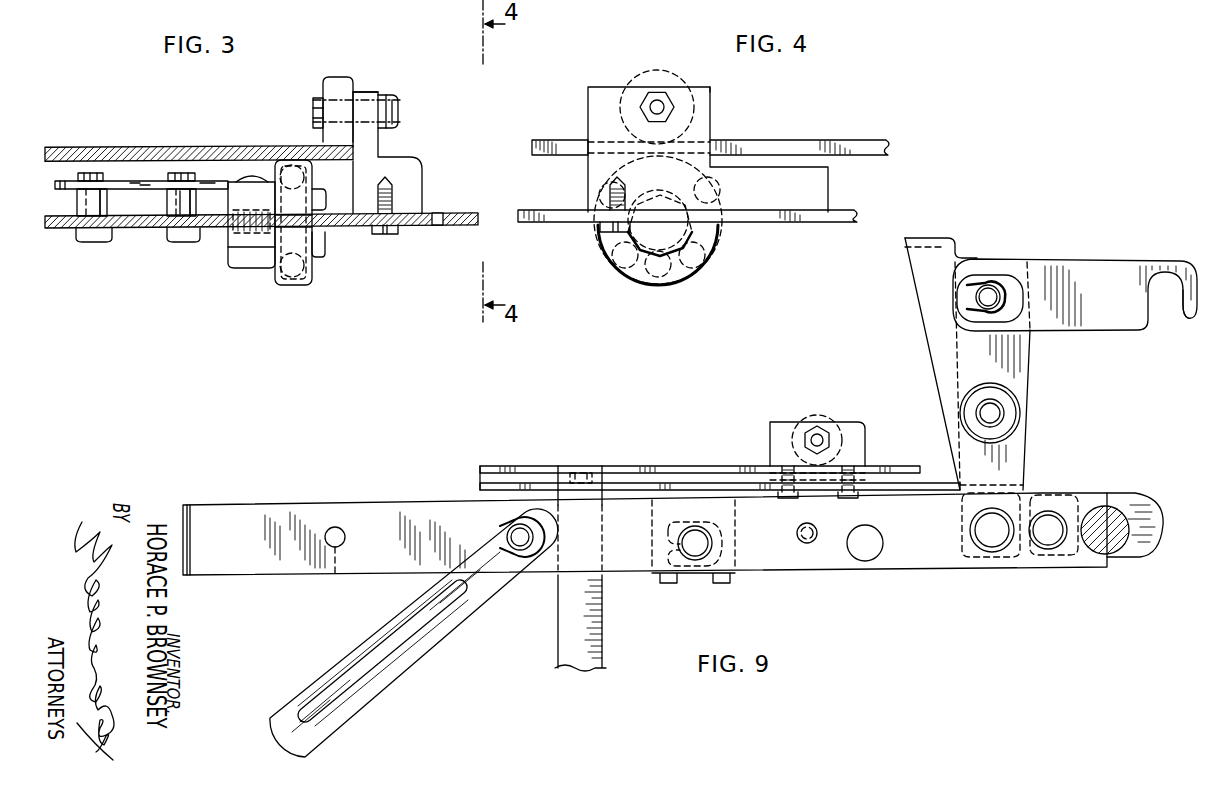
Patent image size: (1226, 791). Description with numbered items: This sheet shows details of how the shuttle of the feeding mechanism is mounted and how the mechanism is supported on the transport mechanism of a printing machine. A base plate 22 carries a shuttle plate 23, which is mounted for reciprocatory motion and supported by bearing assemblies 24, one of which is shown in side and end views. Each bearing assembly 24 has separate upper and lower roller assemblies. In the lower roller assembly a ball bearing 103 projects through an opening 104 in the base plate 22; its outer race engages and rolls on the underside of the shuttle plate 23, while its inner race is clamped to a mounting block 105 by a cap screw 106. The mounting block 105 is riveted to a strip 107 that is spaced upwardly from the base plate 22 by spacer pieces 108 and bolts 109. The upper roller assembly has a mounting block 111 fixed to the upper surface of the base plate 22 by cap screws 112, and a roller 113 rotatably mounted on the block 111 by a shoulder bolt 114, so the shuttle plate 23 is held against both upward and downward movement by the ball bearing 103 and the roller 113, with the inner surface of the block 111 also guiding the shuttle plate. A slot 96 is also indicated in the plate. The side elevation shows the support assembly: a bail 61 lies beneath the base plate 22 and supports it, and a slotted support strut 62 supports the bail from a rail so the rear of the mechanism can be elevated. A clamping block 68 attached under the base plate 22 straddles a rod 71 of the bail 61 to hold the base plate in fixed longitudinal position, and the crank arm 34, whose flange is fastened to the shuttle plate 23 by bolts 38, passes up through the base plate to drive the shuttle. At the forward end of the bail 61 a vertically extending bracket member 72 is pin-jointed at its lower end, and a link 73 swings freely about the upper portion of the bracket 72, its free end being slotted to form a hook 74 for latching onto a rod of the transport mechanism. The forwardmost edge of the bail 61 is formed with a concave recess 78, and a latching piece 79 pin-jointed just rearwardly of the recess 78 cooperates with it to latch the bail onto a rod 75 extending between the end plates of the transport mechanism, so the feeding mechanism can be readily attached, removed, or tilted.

In FIG. 3, the base plate 22 is at (462, 213).
In FIG. 4, the base plate 22 is at (850, 211).
In FIG. 9, the base plate 22 is at (478, 486).
In FIG. 3, the shuttle plate 23 is at (165, 147).
In FIG. 4, the shuttle plate 23 is at (853, 141).
In FIG. 9, the shuttle plate 23 is at (650, 466).
In FIG. 3, the bearing assembly 24 is at (416, 142).
In FIG. 4, the bearing assembly 24 is at (762, 125).
In FIG. 9, the bearing assembly 24 is at (768, 440).
In FIG. 9, the crank arm 34 is at (575, 640).
In FIG. 9, the bolt 38 is at (580, 476).
In FIG. 9, the bail 61 is at (285, 560).
In FIG. 9, the slotted support strut 62 is at (355, 700).
In FIG. 9, the clamping block 68 is at (652, 545).
In FIG. 9, the rod 71 is at (705, 543).
In FIG. 9, the bracket member 72 is at (940, 325).
In FIG. 9, the link 73 is at (1075, 268).
In FIG. 9, the hook 74 is at (1186, 318).
In FIG. 9, the rod 75 is at (1112, 545).
In FIG. 9, the concave recess 78 is at (1095, 540).
In FIG. 9, the latching piece 79 is at (1122, 492).
In FIG. 3, the slot 96 is at (445, 213).
In FIG. 3, the ball bearing 103 is at (288, 275).
In FIG. 4, the ball bearing 103 is at (625, 262).
In FIG. 3, the opening 104 is at (326, 235).
In FIG. 4, the opening 104 is at (728, 222).
In FIG. 3, the mounting block 105 is at (260, 250).
In FIG. 3, the cap screw 106 is at (315, 260).
In FIG. 4, the cap screw 106 is at (698, 268).
In FIG. 3, the strip 107 is at (118, 181).
In FIG. 3, the spacer piece 108 is at (106, 210).
In FIG. 3, the bolt 109 is at (170, 198).
In FIG. 3, the mounting block 111 is at (405, 170).
In FIG. 4, the mounting block 111 is at (600, 172).
In FIG. 3, the cap screw 112 is at (396, 236).
In FIG. 4, the cap screw 112 is at (602, 228).
In FIG. 9, the cap screw 112 is at (796, 499).
In FIG. 3, the roller 113 is at (337, 85).
In FIG. 4, the roller 113 is at (650, 74).
In FIG. 9, the roller 113 is at (822, 415).
In FIG. 3, the shoulder bolt 114 is at (318, 112).
In FIG. 4, the shoulder bolt 114 is at (660, 104).